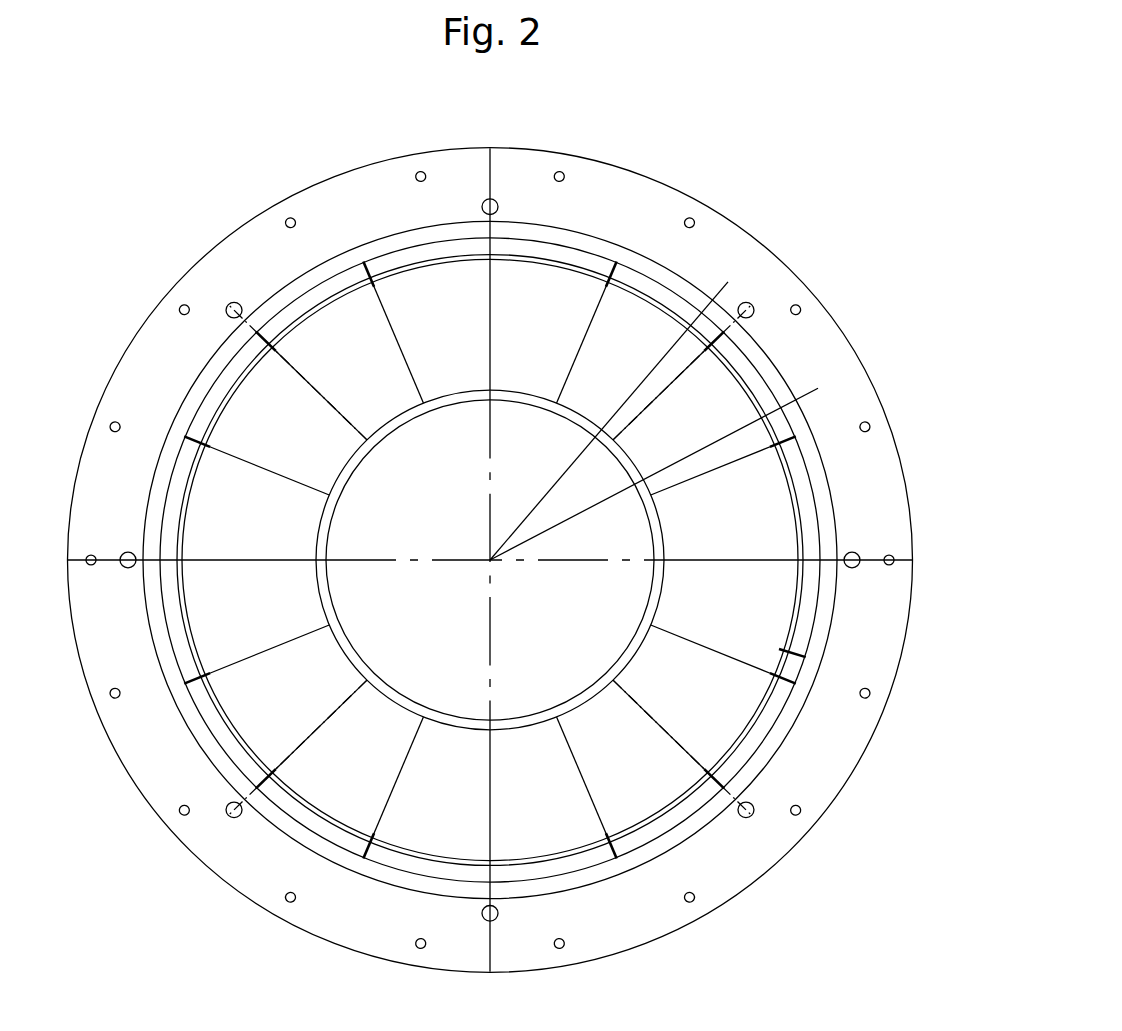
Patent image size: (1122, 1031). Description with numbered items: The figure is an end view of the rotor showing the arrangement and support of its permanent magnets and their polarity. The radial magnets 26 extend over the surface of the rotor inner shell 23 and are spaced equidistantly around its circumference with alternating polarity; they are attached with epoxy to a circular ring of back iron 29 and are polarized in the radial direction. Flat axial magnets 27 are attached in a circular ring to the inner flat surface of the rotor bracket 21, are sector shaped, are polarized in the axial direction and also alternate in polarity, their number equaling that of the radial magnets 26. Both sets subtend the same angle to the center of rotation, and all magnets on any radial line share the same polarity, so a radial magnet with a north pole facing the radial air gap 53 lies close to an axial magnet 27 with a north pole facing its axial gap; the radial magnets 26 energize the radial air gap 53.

The rotor bracket 21 is at (286, 141).
The rotor inner shell 23 is at (836, 772).
The radial magnets 26 is at (629, 276).
The axial magnets 27 is at (729, 407).
The back iron 29 is at (508, 228).
The radial air gap 53 is at (797, 655).